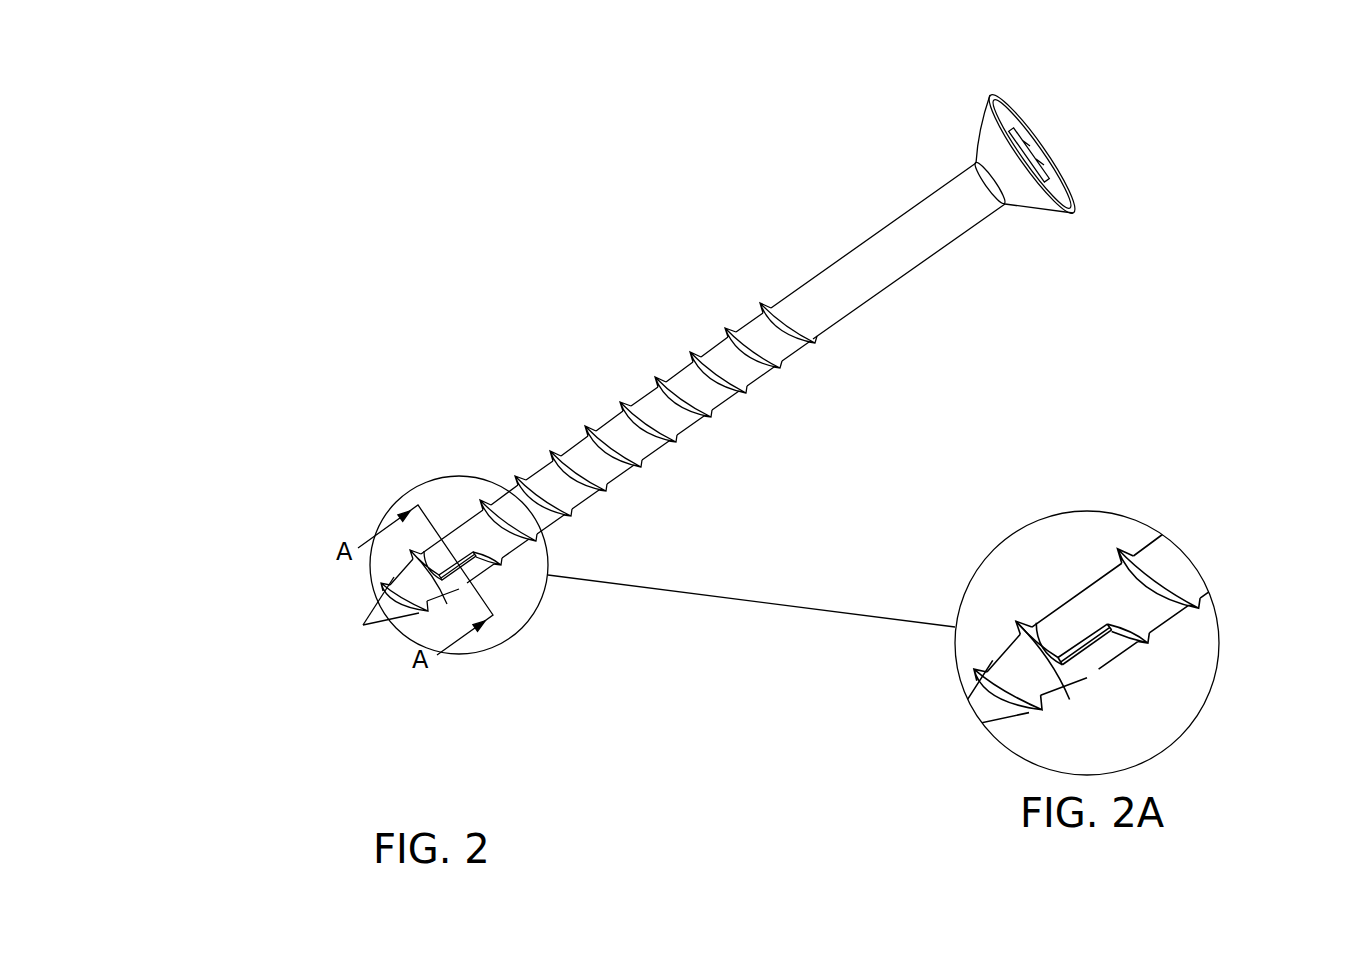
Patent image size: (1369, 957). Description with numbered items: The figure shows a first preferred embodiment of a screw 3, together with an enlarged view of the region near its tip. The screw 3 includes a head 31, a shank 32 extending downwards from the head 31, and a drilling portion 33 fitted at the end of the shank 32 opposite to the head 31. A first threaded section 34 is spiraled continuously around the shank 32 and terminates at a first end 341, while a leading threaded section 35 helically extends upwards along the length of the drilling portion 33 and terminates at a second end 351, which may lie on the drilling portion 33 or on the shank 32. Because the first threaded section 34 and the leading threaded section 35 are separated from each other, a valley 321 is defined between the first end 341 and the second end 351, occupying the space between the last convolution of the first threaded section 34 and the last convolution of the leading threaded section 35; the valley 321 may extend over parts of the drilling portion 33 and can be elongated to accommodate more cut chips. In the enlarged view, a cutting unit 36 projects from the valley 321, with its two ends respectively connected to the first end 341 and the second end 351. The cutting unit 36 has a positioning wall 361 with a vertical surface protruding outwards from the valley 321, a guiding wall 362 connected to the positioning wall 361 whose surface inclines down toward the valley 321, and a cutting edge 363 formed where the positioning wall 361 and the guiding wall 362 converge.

In FIG. 2, the screw 3 is at (1140, 172).
In FIG. 2, the head 31 is at (995, 140).
In FIG. 2, the shank 32 is at (752, 327).
In FIG. 2A, the valley 321 is at (1143, 615).
In FIG. 2, the drilling portion 33 is at (382, 605).
In FIG. 2, the first threaded section 34 is at (618, 405).
In FIG. 2A, the first end 341 is at (1107, 628).
In FIG. 2, the leading threaded section 35 is at (390, 627).
In FIG. 2A, the second end 351 is at (1062, 658).
In FIG. 2, the cutting unit 36 is at (465, 548).
In FIG. 2A, the positioning wall 361 is at (1070, 643).
In FIG. 2A, the guiding wall 362 is at (1085, 655).
In FIG. 2A, the cutting edge 363 is at (1087, 633).